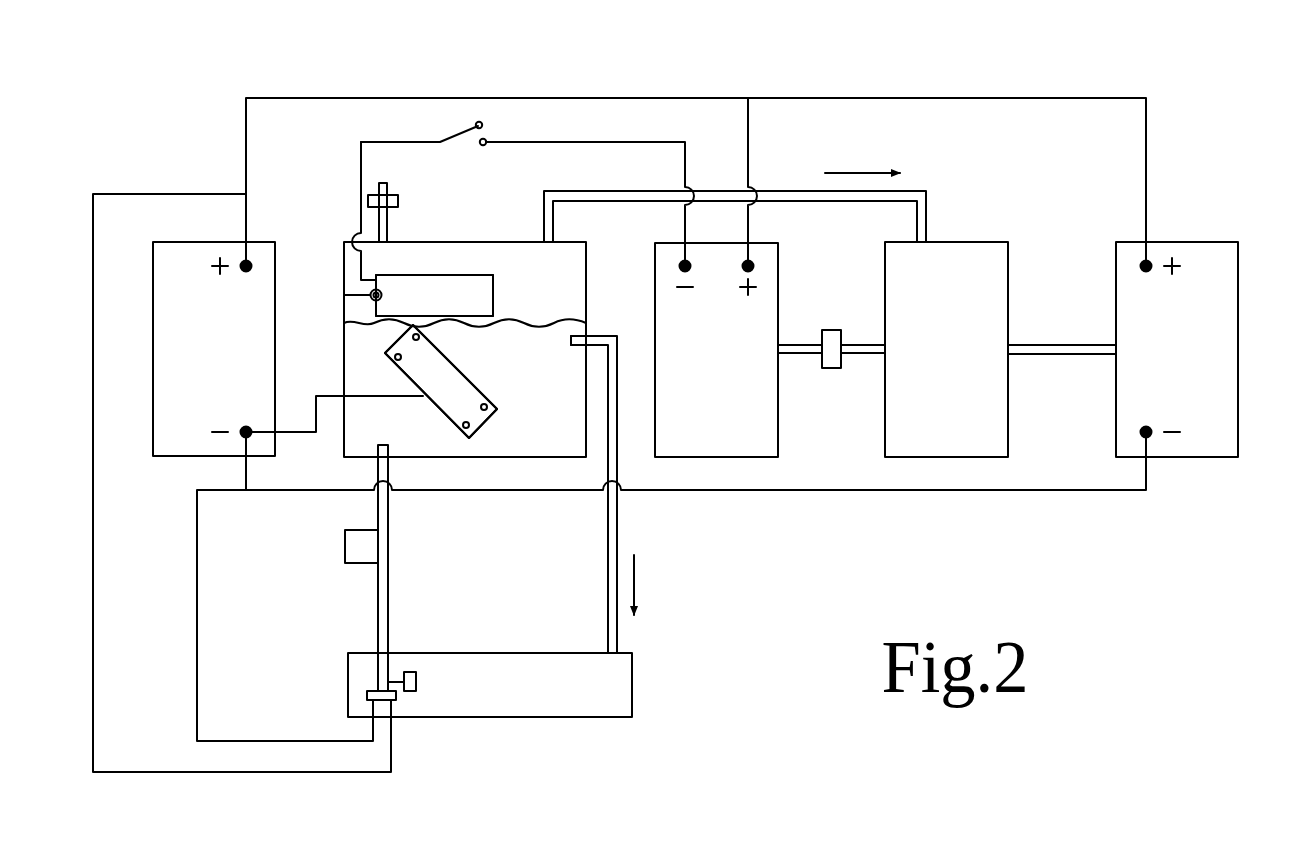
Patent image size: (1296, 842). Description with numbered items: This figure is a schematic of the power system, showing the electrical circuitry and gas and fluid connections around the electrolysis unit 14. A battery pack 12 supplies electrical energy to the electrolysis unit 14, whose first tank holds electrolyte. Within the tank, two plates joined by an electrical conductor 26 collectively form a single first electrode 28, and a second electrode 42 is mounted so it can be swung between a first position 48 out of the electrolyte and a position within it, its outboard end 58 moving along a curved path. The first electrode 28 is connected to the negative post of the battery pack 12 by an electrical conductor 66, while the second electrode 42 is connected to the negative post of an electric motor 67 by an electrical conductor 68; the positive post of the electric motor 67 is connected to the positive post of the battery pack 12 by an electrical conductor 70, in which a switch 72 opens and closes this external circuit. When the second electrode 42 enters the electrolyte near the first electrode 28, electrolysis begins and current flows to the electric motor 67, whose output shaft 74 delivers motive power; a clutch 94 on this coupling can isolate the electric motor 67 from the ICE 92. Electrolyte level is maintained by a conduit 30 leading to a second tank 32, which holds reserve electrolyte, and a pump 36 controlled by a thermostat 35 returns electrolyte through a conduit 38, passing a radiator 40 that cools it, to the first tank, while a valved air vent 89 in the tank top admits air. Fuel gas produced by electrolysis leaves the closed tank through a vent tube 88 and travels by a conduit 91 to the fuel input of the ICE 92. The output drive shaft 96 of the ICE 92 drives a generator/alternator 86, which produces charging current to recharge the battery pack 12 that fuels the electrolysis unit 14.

The battery pack 12 is at (170, 300).
The electrolysis unit 14 is at (497, 467).
The electrical conductor 26 is at (478, 428).
The first electrode 28 is at (455, 400).
The conduit 30 is at (617, 517).
The second tank 32 is at (570, 717).
The thermostat 35 is at (416, 680).
The pump 36 is at (396, 697).
The conduit 38 is at (389, 505).
The radiator 40 is at (345, 540).
The second electrode 42 is at (472, 292).
The first position 48 is at (434, 272).
The outboard end 58 is at (493, 295).
The electrical conductor 66 is at (298, 428).
The electric motor 67 is at (762, 457).
The electrical conductor 68 is at (627, 140).
The electrical conductor 70 is at (536, 97).
The switch 72 is at (438, 136).
The output shaft 74 is at (797, 355).
The generator/alternator 86 is at (1240, 368).
The vent tube 88 is at (544, 217).
The valved air vent 89 is at (388, 222).
The conduit 91 is at (780, 188).
The ICE 92 is at (985, 457).
The clutch 94 is at (833, 330).
The output drive shaft 96 is at (1055, 343).